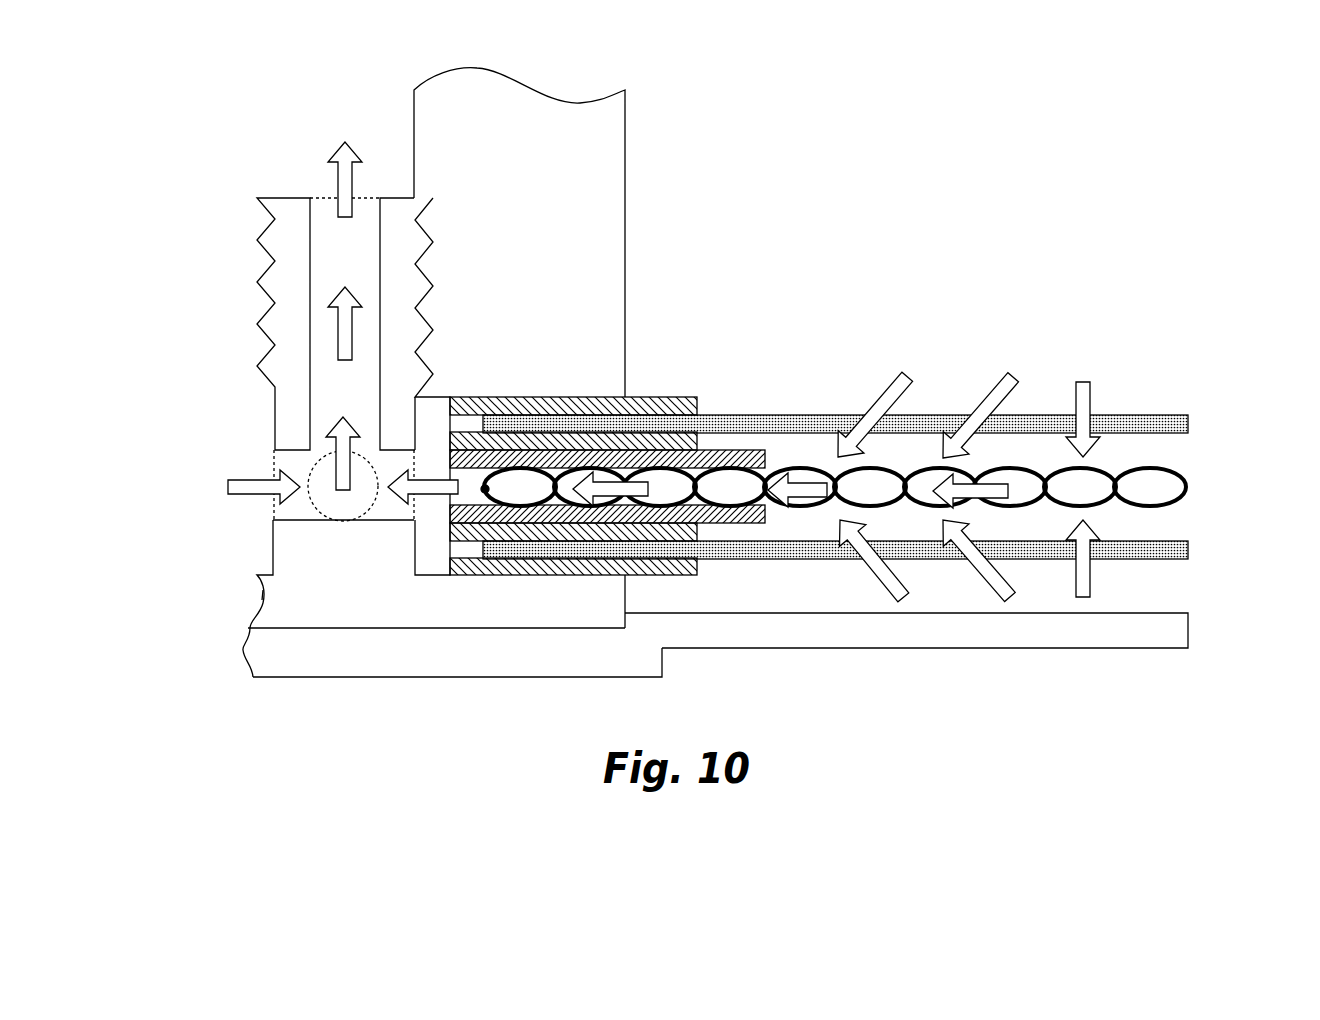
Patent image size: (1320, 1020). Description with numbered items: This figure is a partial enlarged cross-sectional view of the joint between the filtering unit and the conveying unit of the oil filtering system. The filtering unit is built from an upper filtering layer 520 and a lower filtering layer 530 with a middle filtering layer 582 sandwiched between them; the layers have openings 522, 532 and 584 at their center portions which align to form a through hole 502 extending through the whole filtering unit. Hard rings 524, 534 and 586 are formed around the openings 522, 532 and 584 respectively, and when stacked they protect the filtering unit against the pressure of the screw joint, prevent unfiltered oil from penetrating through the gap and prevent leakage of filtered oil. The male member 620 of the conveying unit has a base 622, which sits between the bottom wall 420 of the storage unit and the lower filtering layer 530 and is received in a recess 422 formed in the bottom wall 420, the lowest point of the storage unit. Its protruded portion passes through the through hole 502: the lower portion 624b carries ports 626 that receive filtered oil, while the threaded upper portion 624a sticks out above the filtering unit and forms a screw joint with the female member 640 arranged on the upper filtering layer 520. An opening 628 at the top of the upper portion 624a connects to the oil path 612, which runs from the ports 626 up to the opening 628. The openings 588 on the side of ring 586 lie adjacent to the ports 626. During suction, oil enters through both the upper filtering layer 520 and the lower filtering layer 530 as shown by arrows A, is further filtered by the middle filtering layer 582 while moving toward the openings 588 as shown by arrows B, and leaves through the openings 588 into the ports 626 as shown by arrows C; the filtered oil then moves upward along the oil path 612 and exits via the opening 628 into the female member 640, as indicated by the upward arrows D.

The female member 640 is at (607, 180).
The base 622 is at (578, 612).
The upper portion 624a is at (257, 265).
The lower portion 624b is at (280, 553).
The opening 628 is at (327, 196).
The oil path 612 is at (343, 268).
The openings 588 is at (448, 476).
The opening 584 is at (432, 475).
The through hole 502 is at (344, 485).
The opening 522 is at (432, 412).
The opening 532 is at (430, 490).
The ports 626 is at (413, 520).
The male member 620 is at (263, 598).
The recess 422 is at (605, 663).
The bottom wall 420 is at (1190, 630).
The ring 524 is at (510, 405).
The ring 534 is at (580, 576).
The ring 586 is at (717, 452).
The upper filtering layer 520 is at (1190, 428).
The lower filtering layer 530 is at (1190, 552).
The middle filtering layer 582 is at (1190, 490).
The arrows A is at (904, 377).
The arrows B is at (622, 480).
The arrows C is at (230, 482).
The flow direction D is at (343, 207).